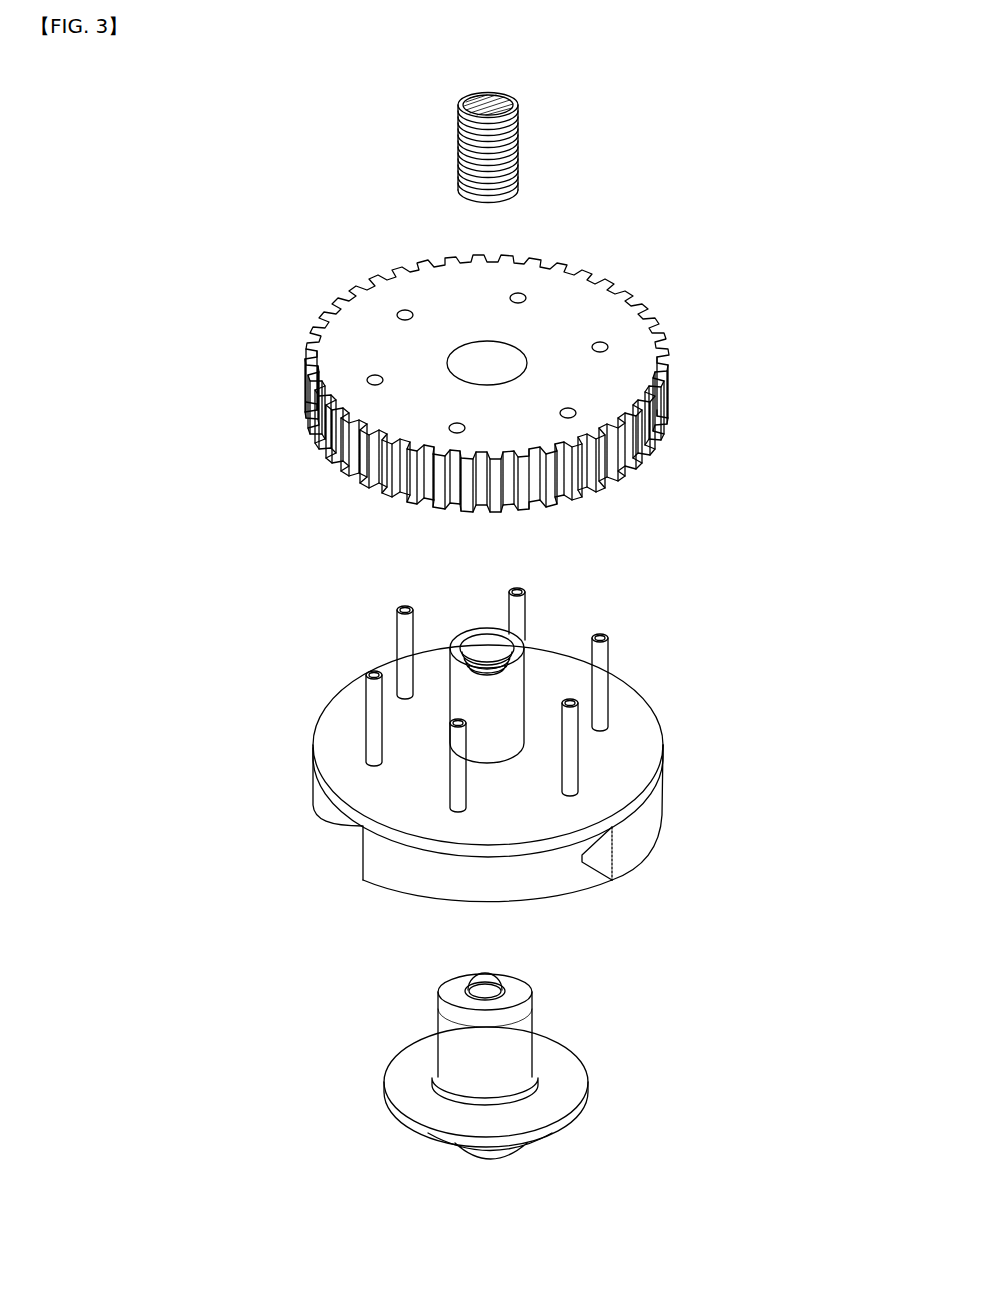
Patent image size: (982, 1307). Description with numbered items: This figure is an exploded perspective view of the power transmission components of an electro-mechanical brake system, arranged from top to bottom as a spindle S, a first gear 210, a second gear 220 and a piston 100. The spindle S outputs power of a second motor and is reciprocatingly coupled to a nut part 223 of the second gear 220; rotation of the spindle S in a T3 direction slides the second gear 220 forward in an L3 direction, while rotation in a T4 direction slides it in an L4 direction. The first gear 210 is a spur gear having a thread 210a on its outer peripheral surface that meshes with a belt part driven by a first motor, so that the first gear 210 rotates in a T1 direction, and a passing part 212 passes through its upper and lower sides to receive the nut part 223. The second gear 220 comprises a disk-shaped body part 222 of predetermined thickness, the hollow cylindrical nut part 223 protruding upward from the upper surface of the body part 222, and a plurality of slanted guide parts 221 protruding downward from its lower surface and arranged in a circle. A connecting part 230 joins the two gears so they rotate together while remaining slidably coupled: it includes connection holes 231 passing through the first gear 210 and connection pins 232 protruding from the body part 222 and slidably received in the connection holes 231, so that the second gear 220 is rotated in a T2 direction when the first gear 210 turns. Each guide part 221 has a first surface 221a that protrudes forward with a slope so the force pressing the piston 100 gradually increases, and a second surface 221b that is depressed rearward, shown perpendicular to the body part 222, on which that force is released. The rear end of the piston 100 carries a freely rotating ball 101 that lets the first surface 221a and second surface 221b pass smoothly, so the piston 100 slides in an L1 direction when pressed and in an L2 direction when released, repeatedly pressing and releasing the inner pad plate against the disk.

The spindle S is at (518, 150).
The T4 direction T4 is at (522, 207).
The T3 direction T3 is at (537, 207).
The T1 direction T1 is at (452, 443).
The T2 direction T2 is at (455, 826).
The L1 direction L1 is at (608, 1190).
The L2 direction L2 is at (608, 1165).
The L3 direction L3 is at (698, 919).
The L4 direction L4 is at (698, 892).
The first gear 210 is at (455, 520).
The thread 210a is at (668, 403).
The passing part 212 is at (493, 362).
The connecting part 230 is at (380, 552).
The connection holes 231 is at (412, 366).
The connection pins 232 is at (400, 638).
The second gear 220 is at (474, 757).
The body part 222 is at (645, 745).
The nut part 223 is at (508, 692).
The guide part 221 is at (433, 832).
The first surface 221a is at (395, 893).
The second surface 221b is at (363, 858).
The piston 100 is at (533, 1041).
The rotating ball 101 is at (490, 983).